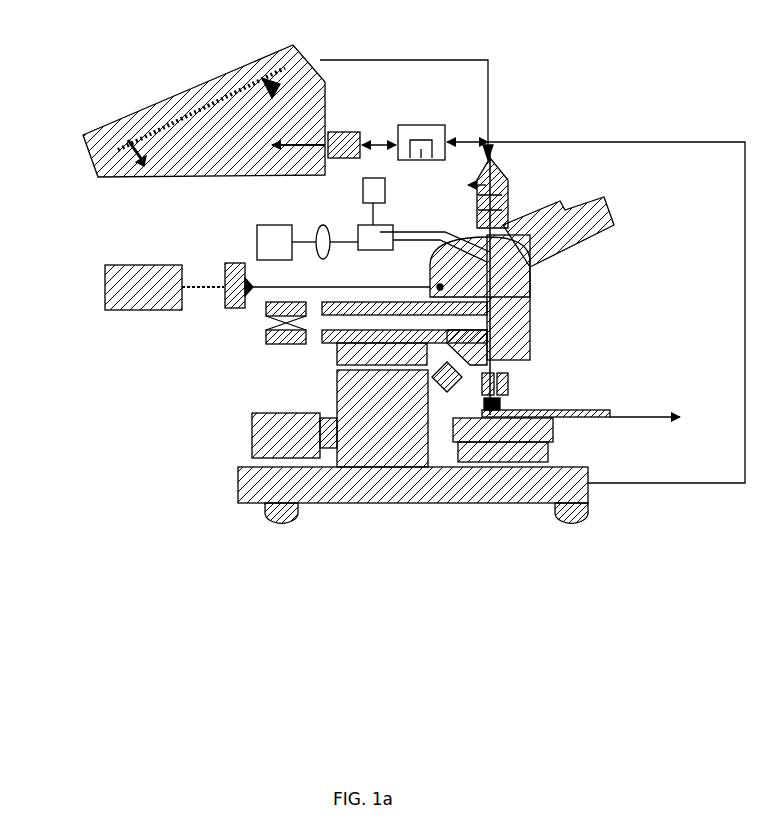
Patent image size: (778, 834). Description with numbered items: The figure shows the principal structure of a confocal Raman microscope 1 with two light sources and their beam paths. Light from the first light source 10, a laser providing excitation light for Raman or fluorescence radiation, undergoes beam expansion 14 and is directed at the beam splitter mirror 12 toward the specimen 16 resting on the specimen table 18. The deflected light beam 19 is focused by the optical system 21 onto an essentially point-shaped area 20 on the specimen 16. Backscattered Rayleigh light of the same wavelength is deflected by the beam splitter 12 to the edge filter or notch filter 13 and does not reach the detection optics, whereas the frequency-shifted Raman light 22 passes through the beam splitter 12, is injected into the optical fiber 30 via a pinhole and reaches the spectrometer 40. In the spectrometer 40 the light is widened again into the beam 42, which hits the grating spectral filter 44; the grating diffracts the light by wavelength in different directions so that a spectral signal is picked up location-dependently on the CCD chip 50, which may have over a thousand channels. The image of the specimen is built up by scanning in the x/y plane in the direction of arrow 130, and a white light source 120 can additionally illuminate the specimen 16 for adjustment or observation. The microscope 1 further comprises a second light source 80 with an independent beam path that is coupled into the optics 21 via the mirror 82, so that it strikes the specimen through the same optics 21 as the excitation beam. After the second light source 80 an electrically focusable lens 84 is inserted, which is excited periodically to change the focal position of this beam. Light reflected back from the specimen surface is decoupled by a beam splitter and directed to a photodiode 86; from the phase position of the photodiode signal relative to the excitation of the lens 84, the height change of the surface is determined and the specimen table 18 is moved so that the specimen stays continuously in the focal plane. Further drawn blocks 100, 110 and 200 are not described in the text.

The confocal Raman microscope 1 is at (588, 158).
The first light source 10 is at (145, 265).
The beam splitter mirror 12 is at (530, 303).
The edge filter or notch filter 13 is at (477, 240).
The beam expansion 14 is at (432, 270).
The specimen 16 is at (520, 445).
The specimen table 18 is at (548, 450).
The deflected light beam 19 is at (530, 333).
The point-shaped area 20 is at (508, 407).
The optical system 21 is at (508, 382).
The Raman light 22 is at (505, 223).
The optical fiber 30 is at (488, 60).
The spectrometer 40 is at (182, 100).
The beam 42 is at (162, 110).
The grating spectral filter 44 is at (102, 167).
The CCD chip 50 is at (338, 126).
The second light source 80 is at (252, 240).
The mirror 82 is at (530, 278).
The electrically focusable lens 84 is at (320, 228).
The photodiode 86 is at (362, 190).
The processing unit 100 is at (421, 137).
The stage 110 is at (480, 443).
The white light source 120 is at (266, 331).
The arrow 130 is at (632, 412).
The memory 200 is at (427, 160).